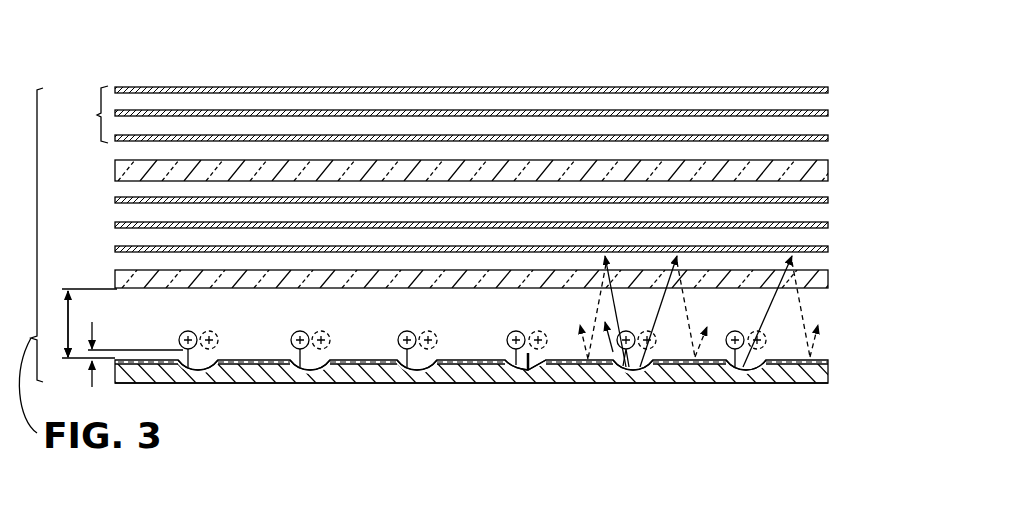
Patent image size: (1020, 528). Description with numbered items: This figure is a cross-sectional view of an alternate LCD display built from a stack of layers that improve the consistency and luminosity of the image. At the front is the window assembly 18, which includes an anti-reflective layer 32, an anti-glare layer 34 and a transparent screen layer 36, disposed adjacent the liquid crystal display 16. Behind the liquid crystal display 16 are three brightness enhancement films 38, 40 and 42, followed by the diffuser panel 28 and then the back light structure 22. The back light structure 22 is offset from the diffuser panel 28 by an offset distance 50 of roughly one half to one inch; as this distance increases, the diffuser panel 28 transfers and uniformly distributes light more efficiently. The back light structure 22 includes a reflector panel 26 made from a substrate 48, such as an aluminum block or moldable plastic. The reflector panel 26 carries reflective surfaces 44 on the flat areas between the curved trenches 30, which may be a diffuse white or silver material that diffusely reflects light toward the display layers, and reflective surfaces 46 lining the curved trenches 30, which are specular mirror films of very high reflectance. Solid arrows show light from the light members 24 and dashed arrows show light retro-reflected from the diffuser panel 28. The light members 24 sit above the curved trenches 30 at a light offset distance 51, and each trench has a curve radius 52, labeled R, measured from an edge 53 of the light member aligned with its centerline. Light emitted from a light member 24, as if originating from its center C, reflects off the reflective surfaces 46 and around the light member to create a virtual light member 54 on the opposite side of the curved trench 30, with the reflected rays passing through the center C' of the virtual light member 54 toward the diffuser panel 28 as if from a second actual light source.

The window assembly 18 is at (97, 115).
The anti-reflective layer 32 is at (828, 89).
The anti-glare layer 34 is at (830, 113).
The transparent screen layer 36 is at (830, 138).
The liquid crystal display 16 is at (830, 170).
The brightness enhancement film 38 is at (830, 200).
The brightness enhancement film 40 is at (830, 225).
The brightness enhancement film 42 is at (830, 249).
The diffuser panel 28 is at (828, 278).
The back light structure 22 is at (500, 398).
The reflector panel 26 is at (812, 382).
The substrate 48 is at (255, 372).
The reflective surfaces 44 is at (261, 358).
The curved trenches 30 is at (469, 423).
The reflective surfaces 46 is at (195, 372).
The curve radius 52 is at (528, 372).
The edge 53 is at (529, 335).
The light members 24 is at (181, 334).
The virtual light members 54 is at (213, 332).
The offset distance 50 is at (63, 320).
The light offset distance 51 is at (89, 350).
The curve radius R is at (527, 352).
The center of the light members C is at (385, 388).
The center of the virtual light members C' is at (456, 389).